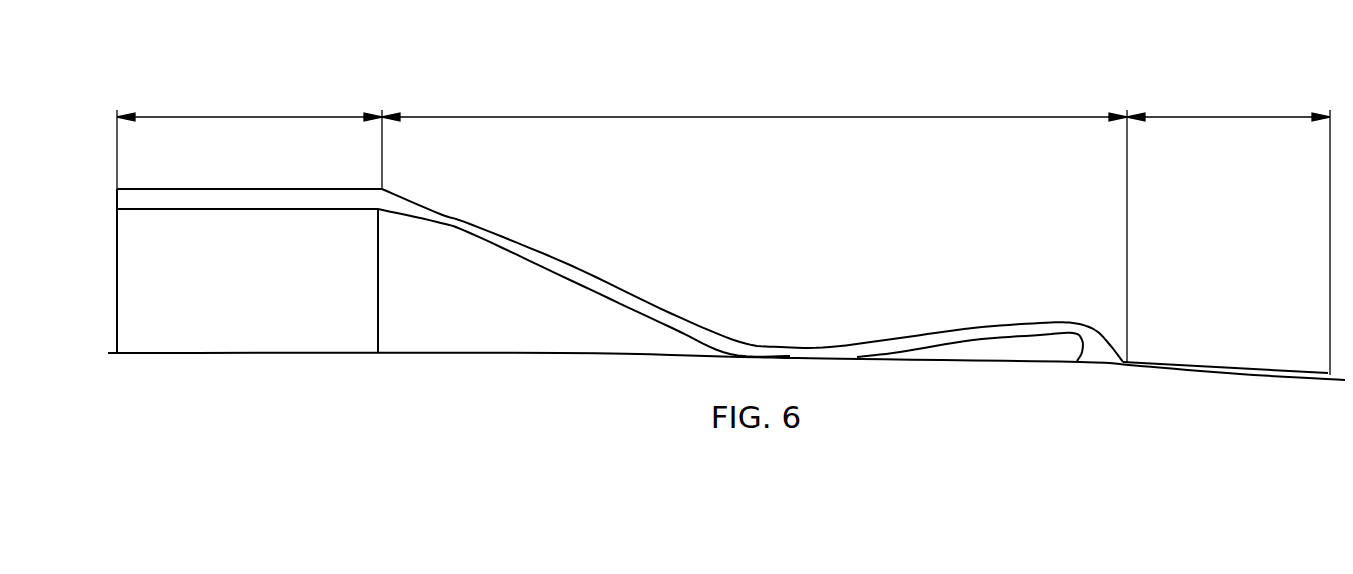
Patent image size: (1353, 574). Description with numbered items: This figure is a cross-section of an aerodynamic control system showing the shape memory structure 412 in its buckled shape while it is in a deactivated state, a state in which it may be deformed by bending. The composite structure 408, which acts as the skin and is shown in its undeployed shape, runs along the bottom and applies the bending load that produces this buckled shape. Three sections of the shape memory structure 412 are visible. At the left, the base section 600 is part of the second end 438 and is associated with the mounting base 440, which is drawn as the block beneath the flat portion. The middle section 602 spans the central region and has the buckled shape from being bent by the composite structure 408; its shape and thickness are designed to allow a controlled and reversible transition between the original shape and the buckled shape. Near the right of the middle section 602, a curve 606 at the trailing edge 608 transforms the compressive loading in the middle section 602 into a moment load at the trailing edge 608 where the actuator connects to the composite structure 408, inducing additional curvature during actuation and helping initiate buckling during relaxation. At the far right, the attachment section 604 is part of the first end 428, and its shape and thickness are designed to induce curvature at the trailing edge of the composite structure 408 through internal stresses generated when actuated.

The base section 600 is at (250, 113).
The middle section 602 is at (755, 117).
The attachment section 604 is at (1228, 115).
The shape memory structure 412 is at (250, 187).
The second end 438 is at (132, 189).
The mounting base 440 is at (202, 355).
The composite structure 408 is at (497, 357).
The curve 606 is at (1068, 320).
The trailing edge 608 is at (1107, 338).
The first end 428 is at (1273, 372).